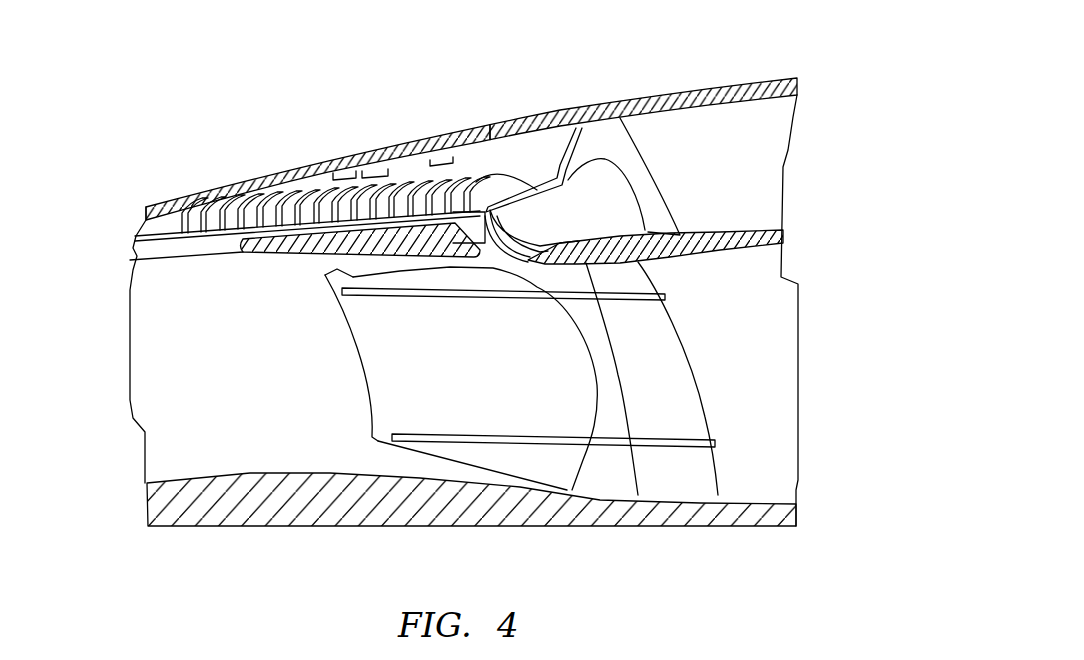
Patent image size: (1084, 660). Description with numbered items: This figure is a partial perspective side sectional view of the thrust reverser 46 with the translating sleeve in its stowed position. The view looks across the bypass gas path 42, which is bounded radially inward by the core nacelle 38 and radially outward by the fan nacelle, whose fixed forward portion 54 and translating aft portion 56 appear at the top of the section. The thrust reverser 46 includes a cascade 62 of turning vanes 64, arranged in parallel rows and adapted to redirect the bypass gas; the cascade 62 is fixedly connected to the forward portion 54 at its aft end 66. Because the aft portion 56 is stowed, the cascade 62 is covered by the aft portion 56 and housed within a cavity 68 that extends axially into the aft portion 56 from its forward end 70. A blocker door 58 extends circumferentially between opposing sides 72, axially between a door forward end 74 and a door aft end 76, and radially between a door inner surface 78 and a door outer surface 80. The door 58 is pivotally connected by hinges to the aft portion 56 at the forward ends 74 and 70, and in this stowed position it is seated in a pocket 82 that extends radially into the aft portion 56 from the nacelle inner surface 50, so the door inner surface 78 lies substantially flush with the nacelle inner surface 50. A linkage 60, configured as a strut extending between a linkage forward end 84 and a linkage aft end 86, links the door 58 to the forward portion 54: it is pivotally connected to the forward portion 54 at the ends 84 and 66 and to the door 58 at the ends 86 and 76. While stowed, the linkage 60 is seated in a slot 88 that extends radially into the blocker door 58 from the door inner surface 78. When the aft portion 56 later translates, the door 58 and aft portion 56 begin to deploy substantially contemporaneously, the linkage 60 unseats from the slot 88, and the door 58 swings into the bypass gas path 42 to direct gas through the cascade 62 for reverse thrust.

The core nacelle 38 is at (160, 510).
The bypass gas path 42 is at (178, 403).
The thrust reverser 46 is at (396, 449).
The nacelle inner surface 50 is at (133, 277).
The forward portion 54 is at (695, 90).
The aft portion 56 is at (225, 183).
The blocker door 58 is at (300, 253).
The linkage 60 is at (379, 294).
The cascade 62 is at (383, 168).
The turning vane 64 is at (435, 177).
The aft end 66 is at (598, 353).
The cavity 68 is at (343, 170).
The forward end 70 is at (588, 387).
The opposing sides 72 is at (325, 275).
The door forward end 74 is at (590, 422).
The door aft end 76 is at (372, 406).
The door inner surface 78 is at (260, 252).
The door outer surface 80 is at (298, 205).
The pocket 82 is at (422, 441).
The linkage forward end 84 is at (697, 443).
The linkage aft end 86 is at (378, 441).
The slot 88 is at (519, 298).